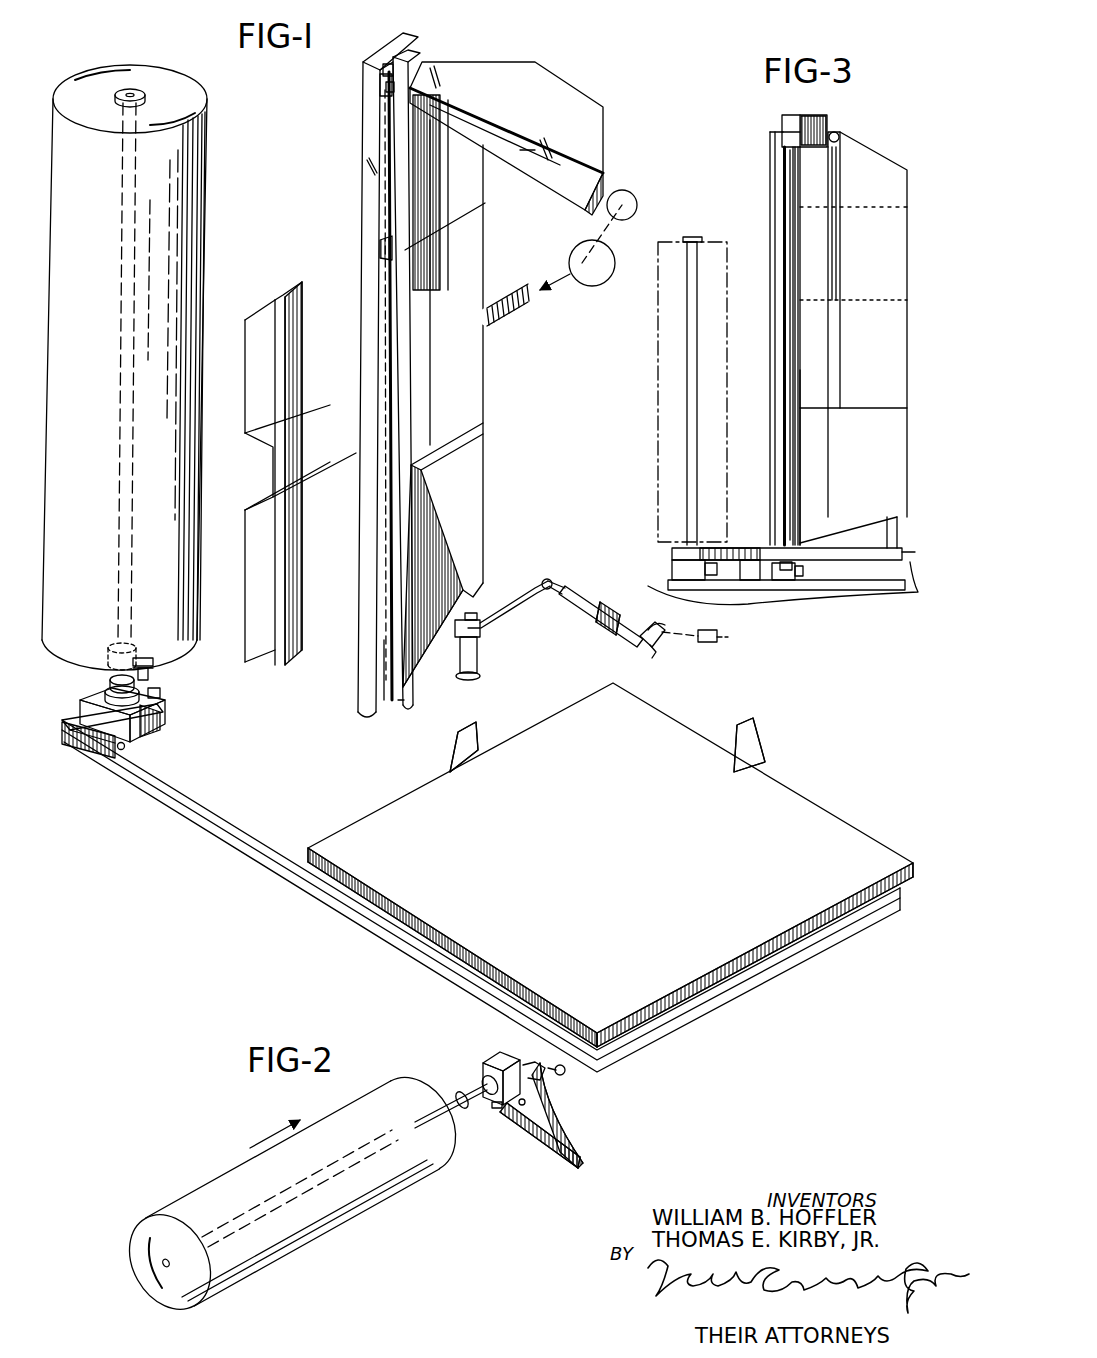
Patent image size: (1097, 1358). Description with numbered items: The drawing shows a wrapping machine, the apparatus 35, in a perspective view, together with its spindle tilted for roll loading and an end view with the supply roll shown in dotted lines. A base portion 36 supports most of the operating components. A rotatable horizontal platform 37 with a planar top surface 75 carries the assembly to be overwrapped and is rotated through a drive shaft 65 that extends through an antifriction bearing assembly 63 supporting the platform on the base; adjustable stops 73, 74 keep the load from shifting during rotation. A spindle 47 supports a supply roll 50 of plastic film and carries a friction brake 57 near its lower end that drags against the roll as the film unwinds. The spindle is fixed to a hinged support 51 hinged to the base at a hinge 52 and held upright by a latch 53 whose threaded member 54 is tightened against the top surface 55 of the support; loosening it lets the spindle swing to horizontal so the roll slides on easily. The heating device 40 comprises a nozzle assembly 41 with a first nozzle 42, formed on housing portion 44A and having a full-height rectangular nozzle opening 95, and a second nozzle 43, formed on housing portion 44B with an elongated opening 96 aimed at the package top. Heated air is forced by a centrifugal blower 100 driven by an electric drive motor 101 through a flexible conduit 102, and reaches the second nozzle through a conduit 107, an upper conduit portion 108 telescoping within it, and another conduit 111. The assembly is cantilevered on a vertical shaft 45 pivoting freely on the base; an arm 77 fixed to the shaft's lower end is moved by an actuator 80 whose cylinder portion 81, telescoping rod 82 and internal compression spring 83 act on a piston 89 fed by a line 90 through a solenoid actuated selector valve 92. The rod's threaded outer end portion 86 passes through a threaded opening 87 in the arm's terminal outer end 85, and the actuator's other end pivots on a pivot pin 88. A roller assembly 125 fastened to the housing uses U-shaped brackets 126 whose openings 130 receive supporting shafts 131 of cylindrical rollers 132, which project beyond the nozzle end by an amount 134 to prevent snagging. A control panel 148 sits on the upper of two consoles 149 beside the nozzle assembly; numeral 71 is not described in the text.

In FIG. 1, the apparatus 35 is at (234, 894).
In FIG. 1, the base portion 36 is at (268, 760).
In FIG. 2, the base portion 36 is at (577, 1115).
In FIG. 1, the horizontal platform 37 is at (678, 747).
In FIG. 3, the horizontal platform 37 is at (740, 547).
In FIG. 1, the device 40 is at (640, 112).
In FIG. 1, the nozzle assembly 41 is at (358, 188).
In FIG. 3, the nozzle assembly 41 is at (768, 185).
In FIG. 1, the first nozzle 42 is at (384, 243).
In FIG. 3, the first nozzle 42 is at (780, 317).
In FIG. 1, the second nozzle 43 is at (555, 182).
In FIG. 3, the second nozzle 43 is at (790, 130).
In FIG. 1, the housing portion 44A is at (470, 467).
In FIG. 1, the housing portion 44B is at (542, 83).
In FIG. 1, the vertical shaft 45 is at (467, 660).
In FIG. 3, the vertical shaft 45 is at (887, 528).
In FIG. 1, the spindle 47 is at (122, 357).
In FIG. 3, the spindle 47 is at (688, 375).
In FIG. 2, the spindle 47 is at (302, 1192).
In FIG. 1, the supply roll 50 is at (193, 258).
In FIG. 3, the supply roll 50 is at (658, 430).
In FIG. 2, the supply roll 50 is at (227, 1180).
In FIG. 1, the hinged support 51 is at (83, 689).
In FIG. 3, the hinged support 51 is at (660, 562).
In FIG. 2, the hinged support 51 is at (485, 1045).
In FIG. 1, the hinge 52 is at (121, 750).
In FIG. 2, the hinge 52 is at (523, 1106).
In FIG. 1, the latch 53 is at (172, 683).
In FIG. 2, the latch 53 is at (582, 1088).
In FIG. 1, the threaded member 54 is at (157, 658).
In FIG. 2, the threaded member 54 is at (580, 1073).
In FIG. 1, the top surface 55 is at (158, 694).
In FIG. 2, the top surface 55 is at (497, 1110).
In FIG. 1, the friction brake 57 is at (103, 643).
In FIG. 3, the antifriction bearing assembly 63 is at (800, 573).
In FIG. 3, the drive shaft 65 is at (787, 562).
In FIG. 3, the support block 71 is at (747, 575).
In FIG. 1, the stop 73 is at (455, 740).
In FIG. 1, the stop 74 is at (764, 739).
In FIG. 1, the top surface 75 is at (791, 812).
In FIG. 1, the arm 77 is at (502, 627).
In FIG. 3, the arm 77 is at (907, 597).
In FIG. 1, the actuator 80 is at (578, 598).
In FIG. 1, the cylinder portion 81 is at (575, 582).
In FIG. 1, the telescoping rod 82 is at (557, 582).
In FIG. 1, the compression spring 83 is at (607, 610).
In FIG. 1, the terminal outer end 85 is at (542, 595).
In FIG. 1, the threaded outer end portion 86 is at (552, 597).
In FIG. 1, the threaded opening 87 is at (543, 582).
In FIG. 1, the pivot pin 88 is at (653, 647).
In FIG. 1, the piston 89 is at (637, 620).
In FIG. 1, the line 90 is at (662, 625).
In FIG. 1, the solenoid actuated selector valve 92 is at (707, 644).
In FIG. 1, the nozzle opening 95 is at (372, 668).
In FIG. 3, the nozzle opening 95 is at (784, 280).
In FIG. 1, the opening 96 is at (523, 172).
In FIG. 3, the opening 96 is at (783, 150).
In FIG. 1, the centrifugal blower 100 is at (593, 278).
In FIG. 1, the electric drive motor 101 is at (628, 197).
In FIG. 1, the flexible conduit 102 is at (513, 327).
In FIG. 1, the conduit 107 is at (440, 410).
In FIG. 3, the conduit 107 is at (835, 385).
In FIG. 1, the upper conduit portion 108 is at (438, 250).
In FIG. 3, the upper conduit portion 108 is at (838, 172).
In FIG. 3, the conduit 111 is at (836, 132).
In FIG. 1, the roller assembly 125 is at (378, 247).
In FIG. 3, the roller assembly 125 is at (768, 203).
In FIG. 1, the U-shaped bracket 126 is at (386, 82).
In FIG. 3, the U-shaped bracket 126 is at (772, 132).
In FIG. 1, the opening 130 is at (415, 36).
In FIG. 1, the supporting shaft 131 is at (427, 60).
In FIG. 1, the cylindrical roller 132 is at (392, 630).
In FIG. 1, the amount 134 is at (397, 503).
In FIG. 1, the control panel 148 is at (272, 293).
In FIG. 1, the console 149 is at (264, 495).